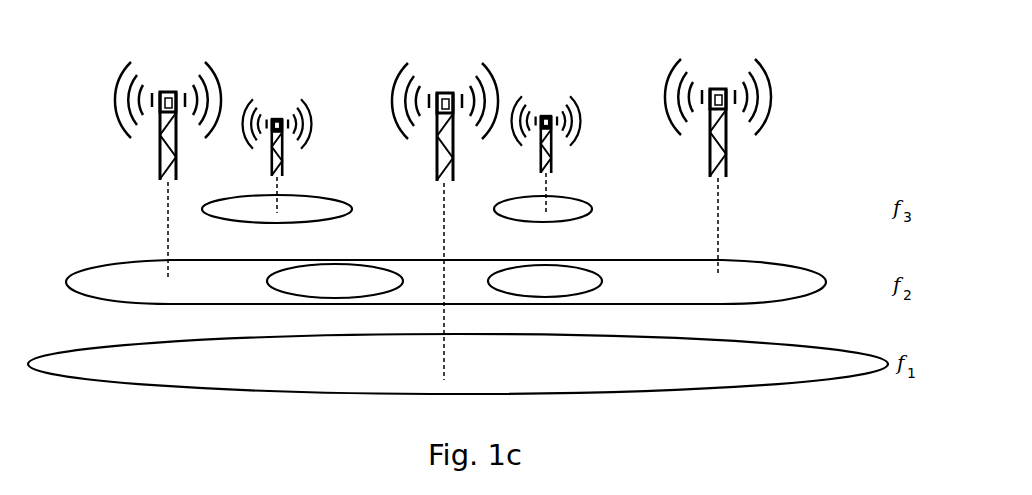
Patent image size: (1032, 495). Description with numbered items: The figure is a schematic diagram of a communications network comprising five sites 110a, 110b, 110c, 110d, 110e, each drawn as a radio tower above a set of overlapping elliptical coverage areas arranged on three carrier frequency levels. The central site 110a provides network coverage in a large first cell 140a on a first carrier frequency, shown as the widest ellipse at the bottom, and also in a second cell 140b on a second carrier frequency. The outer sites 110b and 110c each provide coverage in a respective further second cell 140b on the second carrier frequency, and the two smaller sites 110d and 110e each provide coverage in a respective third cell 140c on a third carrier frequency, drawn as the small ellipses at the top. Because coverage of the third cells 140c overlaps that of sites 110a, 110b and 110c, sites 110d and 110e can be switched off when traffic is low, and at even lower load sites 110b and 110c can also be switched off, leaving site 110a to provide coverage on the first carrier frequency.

The site 110a is at (445, 92).
The site 110b is at (716, 88).
The site 110c is at (167, 91).
The site 110d is at (278, 118).
The site 110e is at (547, 112).
The first cell 140a is at (140, 377).
The second cell 140b is at (115, 265).
The third cell 140c is at (340, 197).